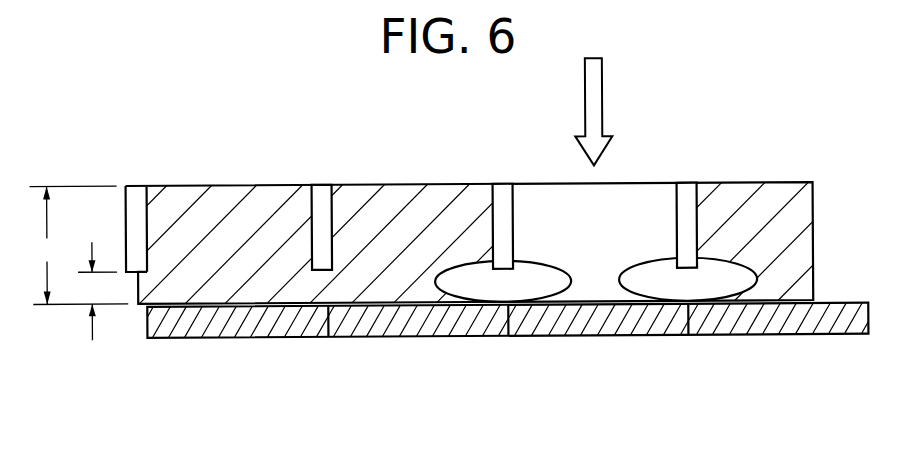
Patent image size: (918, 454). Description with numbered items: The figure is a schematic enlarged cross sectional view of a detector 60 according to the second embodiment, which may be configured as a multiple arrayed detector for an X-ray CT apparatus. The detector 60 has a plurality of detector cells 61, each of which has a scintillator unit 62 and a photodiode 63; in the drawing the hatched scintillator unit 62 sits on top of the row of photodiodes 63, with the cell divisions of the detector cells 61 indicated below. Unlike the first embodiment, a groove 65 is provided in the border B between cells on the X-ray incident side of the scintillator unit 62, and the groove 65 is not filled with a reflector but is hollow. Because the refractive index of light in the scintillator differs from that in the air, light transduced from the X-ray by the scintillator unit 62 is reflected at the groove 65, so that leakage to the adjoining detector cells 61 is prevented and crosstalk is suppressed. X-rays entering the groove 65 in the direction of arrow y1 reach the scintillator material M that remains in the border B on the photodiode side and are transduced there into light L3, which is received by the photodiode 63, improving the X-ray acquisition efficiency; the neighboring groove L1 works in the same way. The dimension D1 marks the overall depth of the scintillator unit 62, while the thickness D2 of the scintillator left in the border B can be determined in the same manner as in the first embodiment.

The detector 60 is at (710, 94).
The scintillator unit 62 is at (234, 200).
The groove 65 is at (503, 202).
The photodiode 63 is at (246, 322).
The detector cells 61 is at (620, 362).
The border B is at (323, 160).
The groove L1 is at (651, 203).
The light L3 is at (712, 288).
The mold material M is at (776, 202).
The arrow y1 is at (597, 95).
The depth D1 is at (79, 245).
The thickness D2 is at (97, 291).